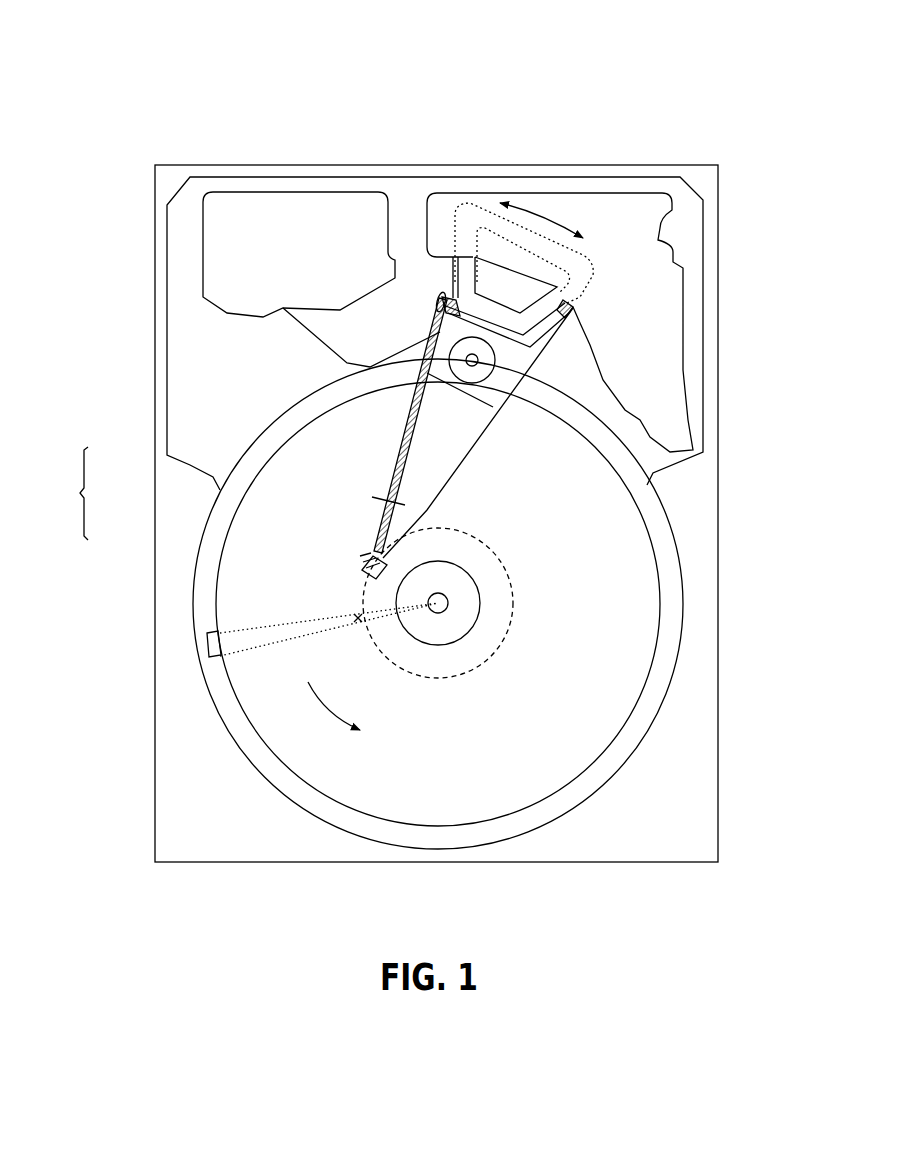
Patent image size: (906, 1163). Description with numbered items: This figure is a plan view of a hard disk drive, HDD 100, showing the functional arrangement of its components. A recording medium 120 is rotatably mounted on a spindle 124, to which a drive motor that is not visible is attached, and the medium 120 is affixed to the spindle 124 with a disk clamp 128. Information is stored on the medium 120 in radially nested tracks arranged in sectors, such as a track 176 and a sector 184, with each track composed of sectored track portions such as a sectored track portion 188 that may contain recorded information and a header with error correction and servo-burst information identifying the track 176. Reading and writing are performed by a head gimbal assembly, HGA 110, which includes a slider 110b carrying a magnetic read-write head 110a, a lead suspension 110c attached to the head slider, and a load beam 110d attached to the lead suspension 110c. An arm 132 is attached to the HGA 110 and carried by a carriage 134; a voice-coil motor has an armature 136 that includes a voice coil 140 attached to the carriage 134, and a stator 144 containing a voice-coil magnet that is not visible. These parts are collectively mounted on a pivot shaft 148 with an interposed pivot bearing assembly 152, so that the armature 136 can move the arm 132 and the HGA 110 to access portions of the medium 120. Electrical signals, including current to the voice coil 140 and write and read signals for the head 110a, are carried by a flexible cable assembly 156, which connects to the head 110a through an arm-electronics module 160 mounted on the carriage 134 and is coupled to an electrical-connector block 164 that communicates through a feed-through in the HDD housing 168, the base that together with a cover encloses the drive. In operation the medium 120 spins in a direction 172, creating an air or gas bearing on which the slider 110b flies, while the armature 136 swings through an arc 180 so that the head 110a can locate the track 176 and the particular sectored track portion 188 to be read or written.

The hard disk drive 100 is at (92, 62).
The head gimbal assembly 110 is at (80, 493).
The magnetic read-write head 110a is at (371, 566).
The slider 110b is at (368, 562).
The lead suspension 110c is at (365, 557).
The load beam 110d is at (362, 552).
The recording medium 120 is at (597, 560).
The spindle 124 is at (438, 603).
The disk clamp 128 is at (453, 617).
The arm 132 is at (430, 460).
The carriage 134 is at (487, 388).
The armature 136 is at (447, 272).
The voice coil 140 is at (458, 285).
The stator 144 is at (657, 273).
The pivot shaft 148 is at (478, 360).
The pivot bearing assembly 152 is at (490, 372).
The flexible cable assembly 156 is at (305, 342).
The arm-electronics module 160 is at (430, 333).
The electrical-connector block 164 is at (225, 253).
The HDD housing 168 is at (703, 173).
The direction 172 is at (383, 701).
The track 176 is at (503, 572).
The arc 180 is at (540, 205).
The sector 184 is at (207, 645).
The sectored track portion 188 is at (357, 618).